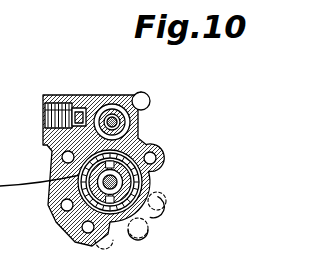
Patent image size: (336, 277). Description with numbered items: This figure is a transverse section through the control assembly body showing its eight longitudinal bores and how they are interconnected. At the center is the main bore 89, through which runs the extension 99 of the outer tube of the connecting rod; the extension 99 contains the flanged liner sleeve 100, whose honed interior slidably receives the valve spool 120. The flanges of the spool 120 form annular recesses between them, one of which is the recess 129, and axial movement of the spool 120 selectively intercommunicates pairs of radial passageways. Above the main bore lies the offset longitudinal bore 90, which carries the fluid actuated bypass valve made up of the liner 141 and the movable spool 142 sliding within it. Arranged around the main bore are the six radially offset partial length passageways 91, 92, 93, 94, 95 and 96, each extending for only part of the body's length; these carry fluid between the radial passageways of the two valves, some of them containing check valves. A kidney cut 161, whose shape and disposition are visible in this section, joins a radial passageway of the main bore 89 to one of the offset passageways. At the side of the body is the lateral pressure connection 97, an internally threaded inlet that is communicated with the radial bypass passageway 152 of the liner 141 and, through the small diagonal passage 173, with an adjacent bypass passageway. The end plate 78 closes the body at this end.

The housing 78 is at (0, 30).
The main bore 89 is at (161, 216).
The offset longitudinal bore 90 is at (122, 117).
The partial length passageway 91 is at (165, 148).
The partial length passageway 92 is at (166, 193).
The partial length passageway 93 is at (140, 243).
The partial length passageway 94 is at (98, 242).
The partial length passageway 95 is at (58, 222).
The partial length passageway 96 is at (54, 164).
The pressure connection 97 is at (43, 123).
The extension of the outer tube 99 is at (57, 190).
The flanged liner sleeve 100 is at (137, 144).
The valve spool 120 is at (104, 197).
The annular recess 129 is at (110, 199).
The liner 141 is at (108, 110).
The movable spool 142 is at (150, 93).
The radial bypass passageway 152 is at (136, 89).
The kidney cut 161 is at (158, 174).
The small diagonal passage 173 is at (79, 118).